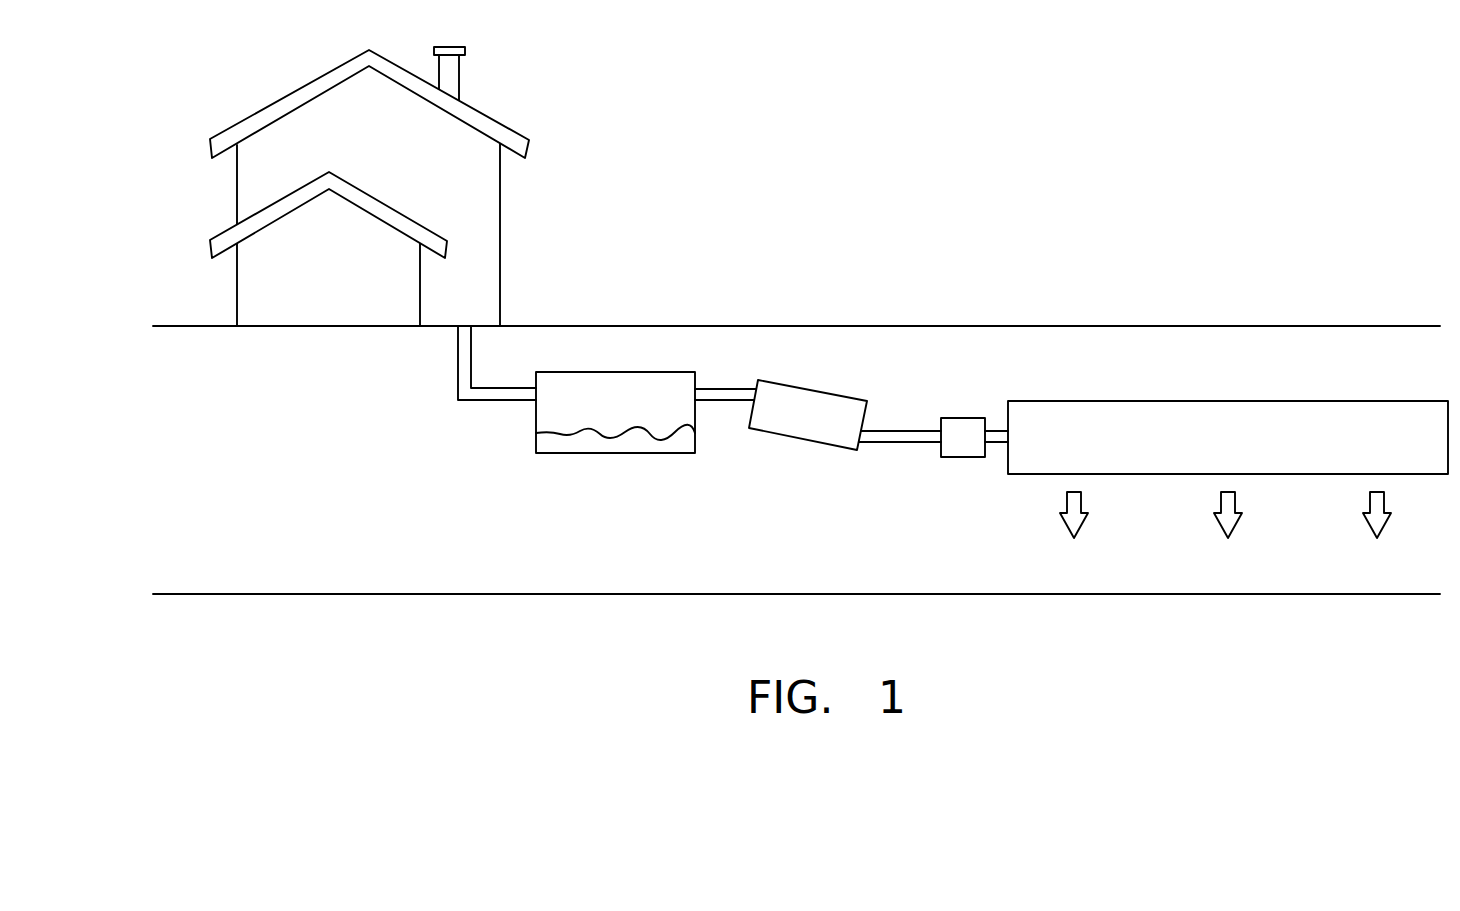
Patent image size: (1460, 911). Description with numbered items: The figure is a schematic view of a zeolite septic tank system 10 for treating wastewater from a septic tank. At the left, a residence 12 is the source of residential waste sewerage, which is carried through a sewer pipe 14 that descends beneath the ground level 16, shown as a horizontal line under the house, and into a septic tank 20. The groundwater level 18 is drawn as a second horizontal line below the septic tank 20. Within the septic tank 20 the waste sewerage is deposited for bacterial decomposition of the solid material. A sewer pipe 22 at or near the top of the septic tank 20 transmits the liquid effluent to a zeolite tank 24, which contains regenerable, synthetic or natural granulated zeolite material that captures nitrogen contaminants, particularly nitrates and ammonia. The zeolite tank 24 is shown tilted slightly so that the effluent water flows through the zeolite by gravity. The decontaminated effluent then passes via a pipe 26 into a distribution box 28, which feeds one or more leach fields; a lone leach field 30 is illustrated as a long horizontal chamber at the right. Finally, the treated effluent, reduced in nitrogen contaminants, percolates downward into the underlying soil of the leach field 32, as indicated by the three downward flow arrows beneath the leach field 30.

The zeolite septic tank system 10 is at (241, 473).
The residence 12 is at (482, 112).
The sewer pipe 14 is at (458, 400).
The ground level 16 is at (1107, 327).
The groundwater level 18 is at (413, 595).
The septic tank 20 is at (535, 453).
The sewer pipe 22 is at (719, 387).
The zeolite tank 24 is at (822, 388).
The pipe 26 is at (901, 443).
The distribution box 28 is at (957, 417).
The leach field 30 is at (1206, 400).
The underlying soil of the leach field 32 is at (1168, 558).